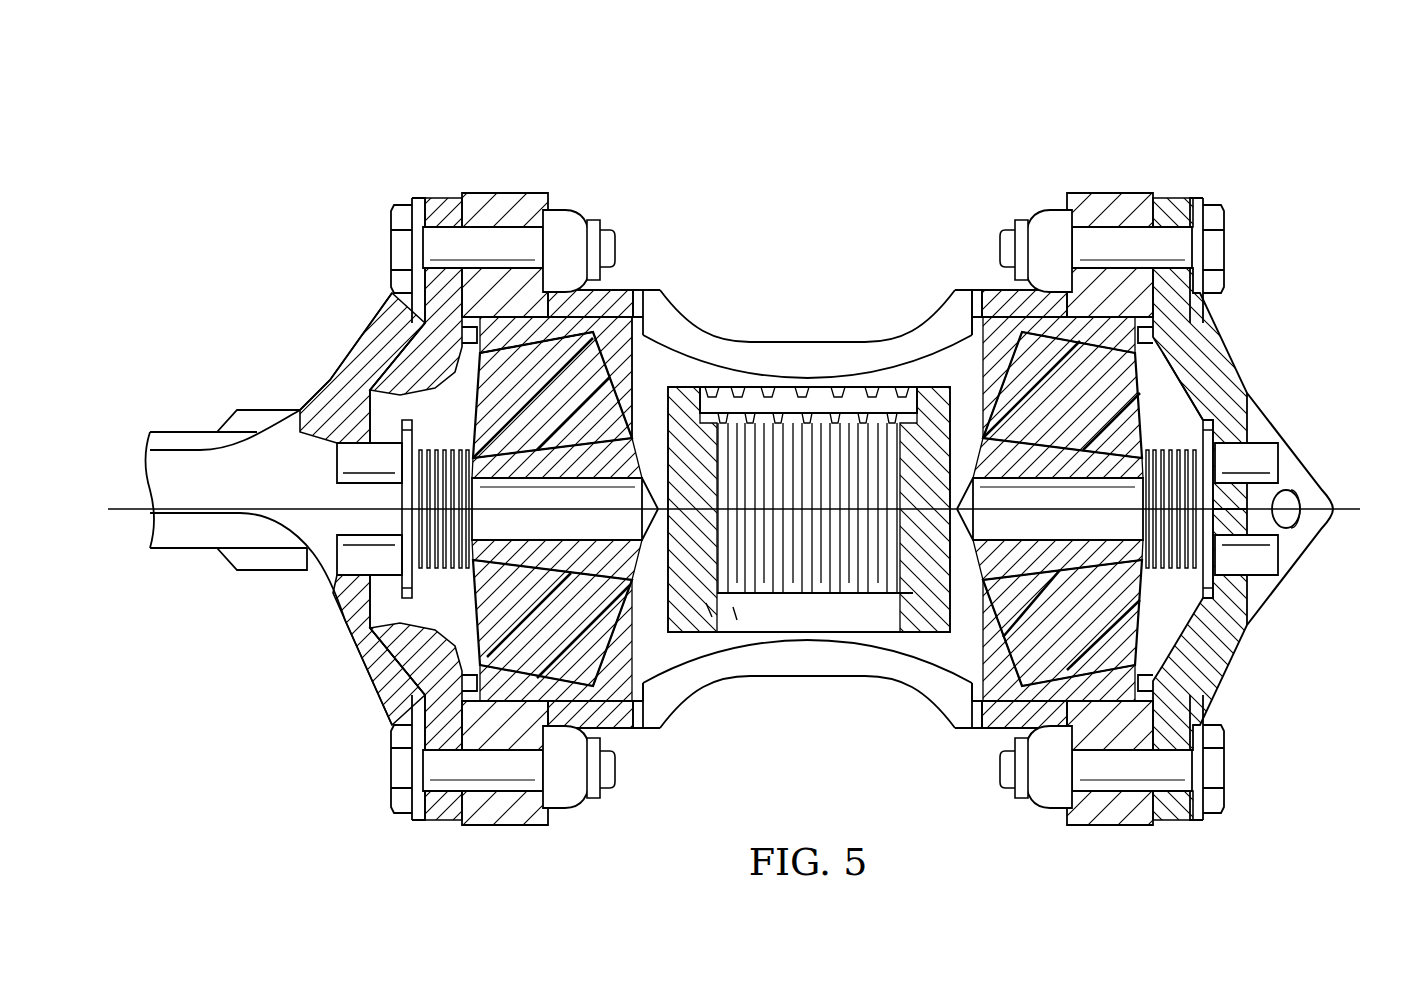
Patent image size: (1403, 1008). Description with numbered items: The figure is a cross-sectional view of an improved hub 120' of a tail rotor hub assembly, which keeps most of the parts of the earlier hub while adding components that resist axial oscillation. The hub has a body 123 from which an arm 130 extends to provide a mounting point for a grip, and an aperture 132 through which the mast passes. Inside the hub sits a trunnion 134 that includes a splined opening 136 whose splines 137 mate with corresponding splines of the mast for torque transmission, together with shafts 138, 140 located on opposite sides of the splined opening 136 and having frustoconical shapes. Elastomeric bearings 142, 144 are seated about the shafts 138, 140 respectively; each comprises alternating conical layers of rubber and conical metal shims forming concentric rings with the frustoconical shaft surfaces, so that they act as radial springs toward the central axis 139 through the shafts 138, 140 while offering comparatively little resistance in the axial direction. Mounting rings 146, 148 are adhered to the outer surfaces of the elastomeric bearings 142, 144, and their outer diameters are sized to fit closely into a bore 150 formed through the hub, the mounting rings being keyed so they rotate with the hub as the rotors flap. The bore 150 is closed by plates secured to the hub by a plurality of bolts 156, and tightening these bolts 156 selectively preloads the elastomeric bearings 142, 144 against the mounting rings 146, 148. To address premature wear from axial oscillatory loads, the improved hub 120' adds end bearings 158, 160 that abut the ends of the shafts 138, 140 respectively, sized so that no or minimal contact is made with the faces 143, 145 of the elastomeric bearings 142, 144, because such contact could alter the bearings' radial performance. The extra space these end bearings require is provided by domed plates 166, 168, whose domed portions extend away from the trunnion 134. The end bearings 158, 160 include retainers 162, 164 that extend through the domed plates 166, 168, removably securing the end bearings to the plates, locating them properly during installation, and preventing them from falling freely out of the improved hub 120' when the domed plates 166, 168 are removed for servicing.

The improved hub 120' is at (749, 459).
The body 123 is at (487, 192).
The arm 130 is at (180, 432).
The aperture 132 is at (700, 325).
The trunnion 134 is at (658, 640).
The splined opening 136 is at (712, 612).
The splines 137 is at (835, 580).
The shaft 138 is at (1042, 565).
The central axis 139 is at (1360, 510).
The shaft 140 is at (583, 453).
The elastomeric bearing 142 is at (960, 710).
The face 143 is at (1160, 400).
The elastomeric bearing 144 is at (410, 598).
The face 145 is at (440, 572).
The mounting ring 146 is at (1113, 318).
The mounting ring 148 is at (595, 340).
The bore 150 is at (965, 328).
The bolts 156 is at (403, 204).
The end bearing 158 is at (1200, 613).
The end bearing 160 is at (450, 447).
The retainer 162 is at (1267, 447).
The retainer 164 is at (345, 462).
The domed plate 166 is at (1227, 667).
The domed plate 168 is at (363, 415).